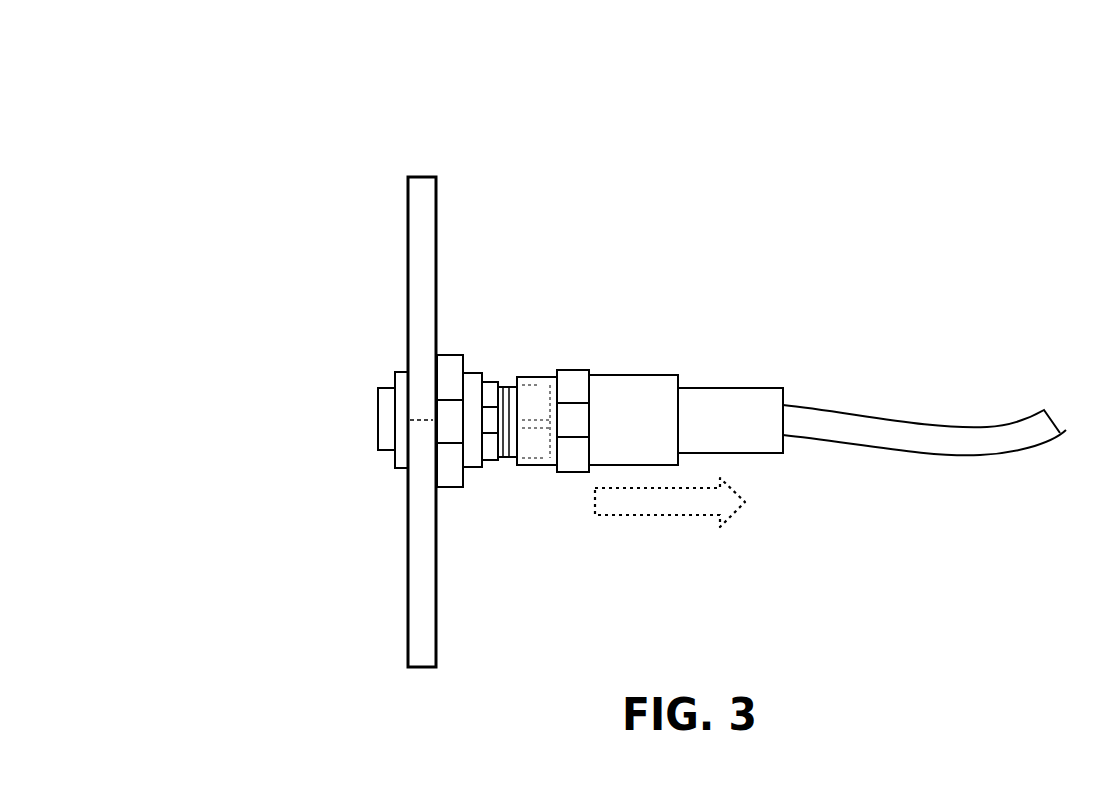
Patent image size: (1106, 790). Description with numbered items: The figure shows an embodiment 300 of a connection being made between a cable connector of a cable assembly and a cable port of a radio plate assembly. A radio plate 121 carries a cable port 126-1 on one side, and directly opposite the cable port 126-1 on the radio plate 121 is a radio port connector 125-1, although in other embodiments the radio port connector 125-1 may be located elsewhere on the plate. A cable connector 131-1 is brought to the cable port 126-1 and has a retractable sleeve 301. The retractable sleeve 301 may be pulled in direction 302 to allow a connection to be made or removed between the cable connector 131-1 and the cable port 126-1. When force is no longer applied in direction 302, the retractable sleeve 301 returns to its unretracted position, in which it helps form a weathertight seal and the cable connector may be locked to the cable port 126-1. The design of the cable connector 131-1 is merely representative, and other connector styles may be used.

The embodiment of a connection 300 is at (318, 73).
The radio plate 121 is at (428, 177).
The radio port connector 125-1 is at (386, 451).
The cable port 126-1 is at (483, 361).
The cable connector 131-1 is at (638, 343).
The retractable sleeve 301 is at (633, 420).
The direction 302 is at (670, 502).